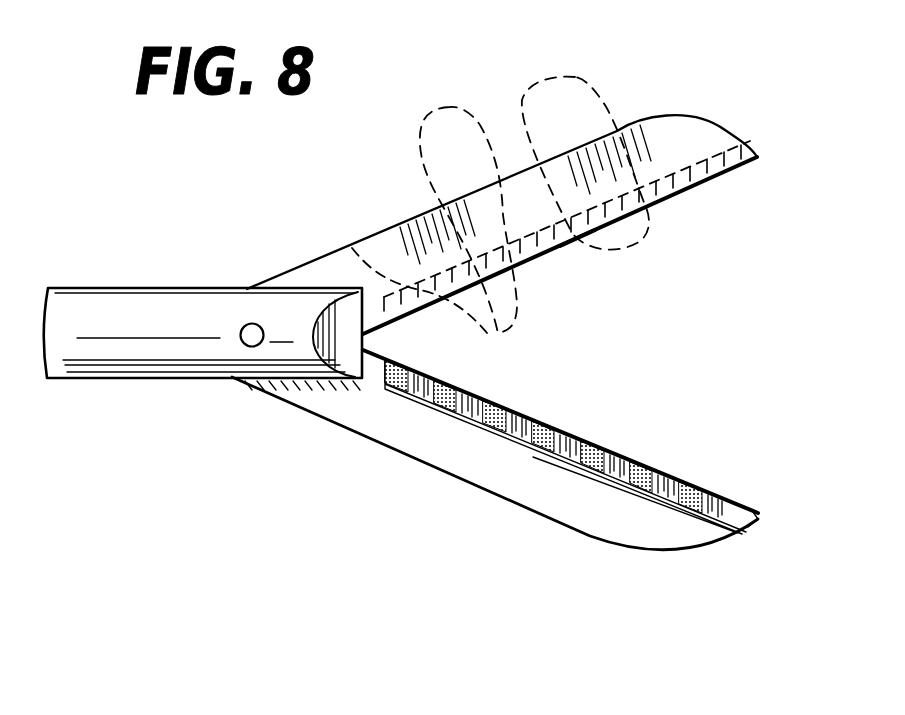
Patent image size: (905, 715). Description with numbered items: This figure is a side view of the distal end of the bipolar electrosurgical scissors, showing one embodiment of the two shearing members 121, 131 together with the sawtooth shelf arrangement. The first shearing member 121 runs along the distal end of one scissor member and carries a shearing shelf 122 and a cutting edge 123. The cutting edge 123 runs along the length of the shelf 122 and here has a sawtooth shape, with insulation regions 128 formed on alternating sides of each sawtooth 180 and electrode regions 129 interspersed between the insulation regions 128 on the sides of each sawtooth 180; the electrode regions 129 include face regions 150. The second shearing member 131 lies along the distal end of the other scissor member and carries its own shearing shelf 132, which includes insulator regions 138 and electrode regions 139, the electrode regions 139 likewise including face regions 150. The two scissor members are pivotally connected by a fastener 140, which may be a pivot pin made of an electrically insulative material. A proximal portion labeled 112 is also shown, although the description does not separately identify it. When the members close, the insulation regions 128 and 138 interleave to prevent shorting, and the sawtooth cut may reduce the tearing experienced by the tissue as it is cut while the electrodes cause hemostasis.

The handle 112 is at (100, 288).
The shearing member 121 is at (672, 125).
The shearing shelf 122 is at (693, 187).
The cutting edge 123 is at (575, 243).
The insulator regions 128 is at (756, 169).
The electrode regions 129 is at (349, 242).
The shearing member 131 is at (652, 534).
The shearing shelf 132 is at (640, 468).
The insulator regions 138 is at (395, 386).
The electrode regions 139 is at (620, 459).
The fastener 140 is at (246, 336).
The face regions 150 is at (422, 398).
The sawtooth 180 is at (527, 200).